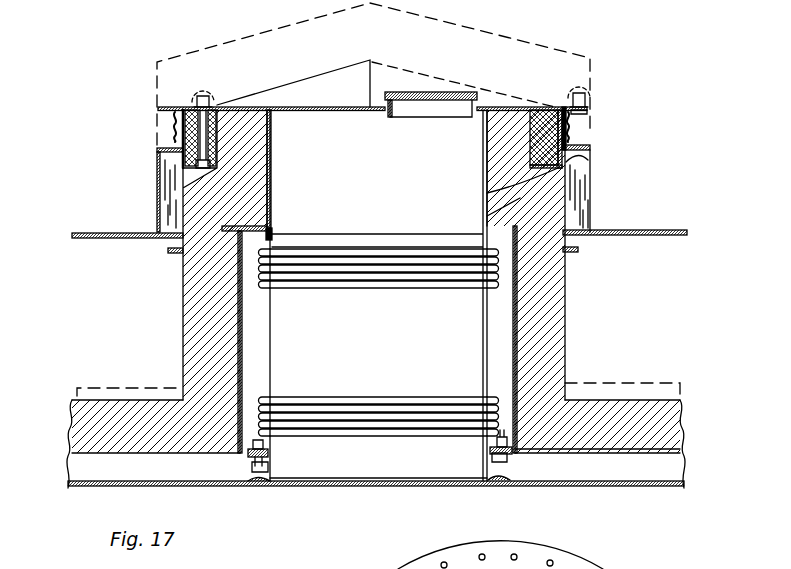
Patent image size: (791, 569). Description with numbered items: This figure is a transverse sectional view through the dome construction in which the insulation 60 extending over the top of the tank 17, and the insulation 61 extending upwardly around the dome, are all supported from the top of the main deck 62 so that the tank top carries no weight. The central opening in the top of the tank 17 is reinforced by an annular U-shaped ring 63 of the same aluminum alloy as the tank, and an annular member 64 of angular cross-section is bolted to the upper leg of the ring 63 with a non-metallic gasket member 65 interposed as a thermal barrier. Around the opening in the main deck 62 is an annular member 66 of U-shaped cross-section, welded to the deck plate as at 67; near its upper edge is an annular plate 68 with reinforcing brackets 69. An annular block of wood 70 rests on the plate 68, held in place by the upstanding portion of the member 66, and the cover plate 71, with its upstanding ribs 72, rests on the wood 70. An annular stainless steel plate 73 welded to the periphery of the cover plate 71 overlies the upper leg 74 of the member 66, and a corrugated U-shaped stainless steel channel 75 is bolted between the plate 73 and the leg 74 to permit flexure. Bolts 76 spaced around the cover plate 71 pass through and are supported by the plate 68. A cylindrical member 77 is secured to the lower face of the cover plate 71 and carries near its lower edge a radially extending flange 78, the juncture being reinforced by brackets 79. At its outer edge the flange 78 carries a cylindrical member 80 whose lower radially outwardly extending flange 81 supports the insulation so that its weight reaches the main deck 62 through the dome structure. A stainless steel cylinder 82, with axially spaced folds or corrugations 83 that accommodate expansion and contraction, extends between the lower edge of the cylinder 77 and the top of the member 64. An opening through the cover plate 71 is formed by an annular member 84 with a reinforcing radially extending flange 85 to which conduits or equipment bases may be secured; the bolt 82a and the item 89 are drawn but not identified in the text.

The tank 17 is at (676, 484).
The insulation 60 is at (633, 400).
The insulation 61 is at (566, 314).
The main deck 62 is at (113, 232).
The annular U-shaped ring 63 is at (256, 466).
The annular member 64 is at (502, 428).
The gasket member 65 is at (489, 450).
The annular member 66 is at (568, 194).
The weld 67 is at (591, 213).
The annular plate 68 is at (486, 188).
The reinforcing brackets 69 is at (570, 173).
The annular block of wood 70 is at (541, 109).
The cover plate 71 is at (500, 106).
The ribs 72 is at (319, 77).
The annular stainless steel plate 73 is at (557, 106).
The upper leg 74 is at (590, 148).
The U-shaped stainless steel channel 75 is at (574, 127).
The bolts 76 is at (180, 152).
The cylindrical member 77 is at (272, 149).
The radially extending flange 78 is at (265, 229).
The brackets 79 is at (246, 224).
The cylindrical member 80 is at (240, 336).
The radially outwardly extending flange 81 is at (221, 453).
The stainless steel cylinder 82 is at (483, 331).
The bolt 82a is at (586, 96).
The folds or corrugations 83 is at (480, 280).
The annular member 84 is at (440, 119).
The reinforcing radially extending flange 85 is at (433, 91).
The lip 89 is at (392, 119).